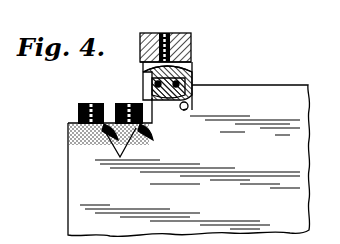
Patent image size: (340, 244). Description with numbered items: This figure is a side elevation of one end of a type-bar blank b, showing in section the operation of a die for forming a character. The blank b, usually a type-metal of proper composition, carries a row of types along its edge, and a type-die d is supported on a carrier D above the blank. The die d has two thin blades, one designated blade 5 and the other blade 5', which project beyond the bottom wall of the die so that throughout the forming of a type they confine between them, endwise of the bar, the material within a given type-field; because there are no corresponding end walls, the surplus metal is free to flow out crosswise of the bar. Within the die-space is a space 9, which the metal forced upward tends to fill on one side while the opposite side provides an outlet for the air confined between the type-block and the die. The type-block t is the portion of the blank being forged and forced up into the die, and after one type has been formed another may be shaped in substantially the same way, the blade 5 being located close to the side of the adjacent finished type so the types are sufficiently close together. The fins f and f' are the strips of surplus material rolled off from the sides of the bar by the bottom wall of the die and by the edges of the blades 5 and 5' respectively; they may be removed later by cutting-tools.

The carrier D is at (152, 33).
The type-die d is at (184, 63).
The space 9 is at (143, 76).
The blade 5 is at (156, 81).
The blade 5' is at (199, 88).
The type-block t is at (114, 106).
The fin f is at (96, 148).
The fin f' is at (175, 125).
The blank b is at (189, 160).